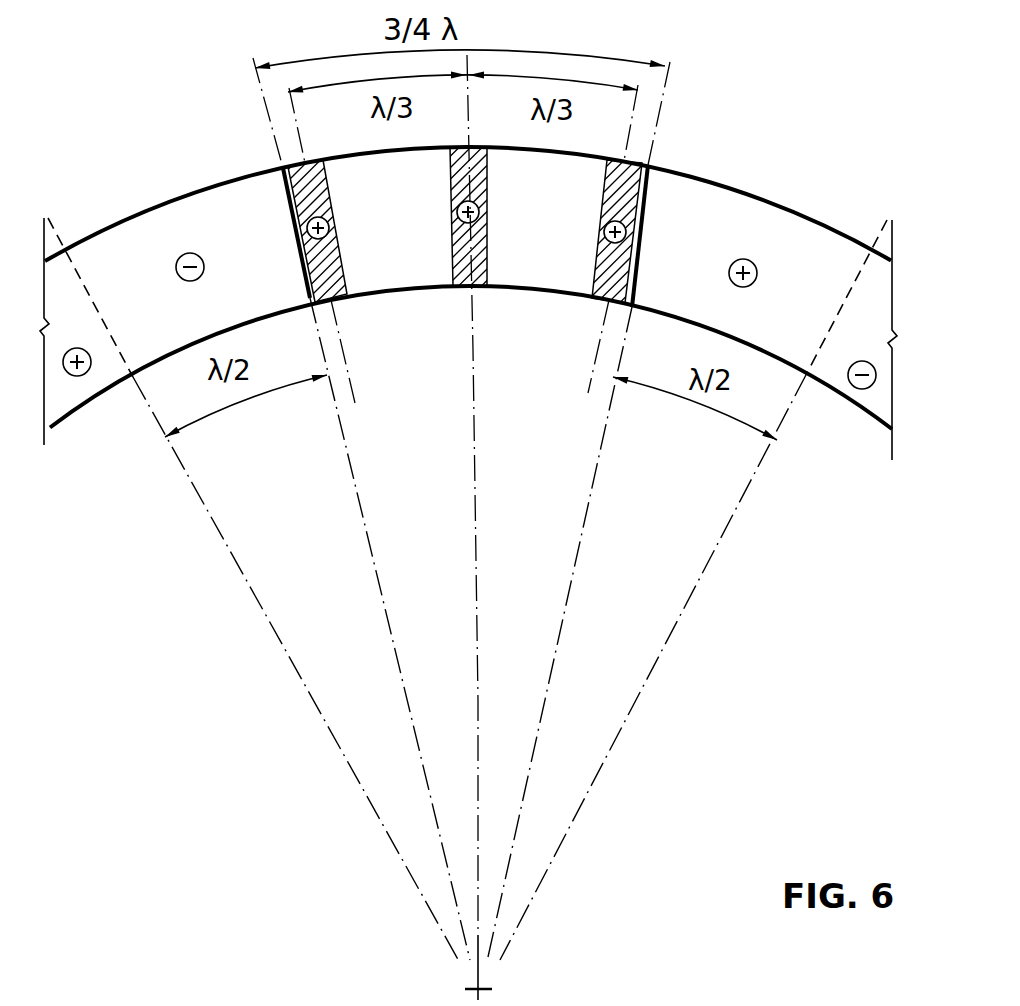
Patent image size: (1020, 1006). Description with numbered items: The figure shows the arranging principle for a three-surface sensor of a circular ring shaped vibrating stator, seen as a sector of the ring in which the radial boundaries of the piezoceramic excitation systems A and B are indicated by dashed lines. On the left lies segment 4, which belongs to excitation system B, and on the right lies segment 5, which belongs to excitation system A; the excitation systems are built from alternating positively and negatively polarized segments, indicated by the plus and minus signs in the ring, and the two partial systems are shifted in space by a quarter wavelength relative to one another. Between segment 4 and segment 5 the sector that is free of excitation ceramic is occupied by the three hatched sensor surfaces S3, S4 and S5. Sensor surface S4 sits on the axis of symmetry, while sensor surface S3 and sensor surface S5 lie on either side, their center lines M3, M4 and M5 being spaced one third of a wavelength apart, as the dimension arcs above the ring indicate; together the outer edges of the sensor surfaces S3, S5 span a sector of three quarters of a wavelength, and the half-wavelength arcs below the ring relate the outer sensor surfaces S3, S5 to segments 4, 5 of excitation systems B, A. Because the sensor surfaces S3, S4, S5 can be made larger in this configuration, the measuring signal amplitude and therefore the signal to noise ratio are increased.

The segment 4 is at (163, 216).
The segment 5 is at (767, 221).
The excitation system A is at (852, 220).
The excitation system B is at (91, 206).
The sensor surface S3 is at (327, 196).
The sensor surface S4 is at (491, 241).
The sensor surface S5 is at (640, 160).
The center line M3 is at (355, 403).
The center line M4 is at (473, 378).
The center line M5 is at (588, 395).